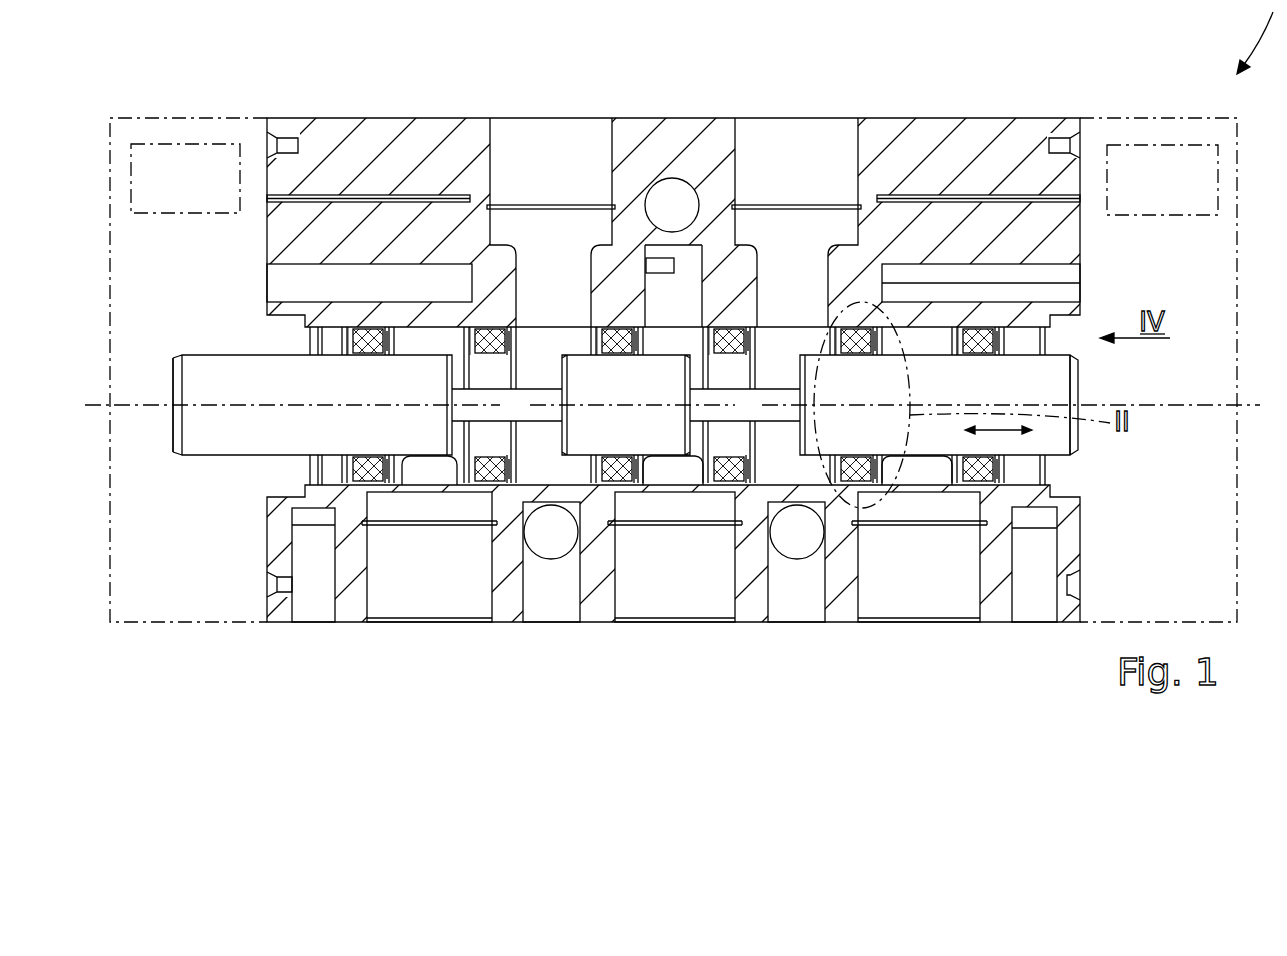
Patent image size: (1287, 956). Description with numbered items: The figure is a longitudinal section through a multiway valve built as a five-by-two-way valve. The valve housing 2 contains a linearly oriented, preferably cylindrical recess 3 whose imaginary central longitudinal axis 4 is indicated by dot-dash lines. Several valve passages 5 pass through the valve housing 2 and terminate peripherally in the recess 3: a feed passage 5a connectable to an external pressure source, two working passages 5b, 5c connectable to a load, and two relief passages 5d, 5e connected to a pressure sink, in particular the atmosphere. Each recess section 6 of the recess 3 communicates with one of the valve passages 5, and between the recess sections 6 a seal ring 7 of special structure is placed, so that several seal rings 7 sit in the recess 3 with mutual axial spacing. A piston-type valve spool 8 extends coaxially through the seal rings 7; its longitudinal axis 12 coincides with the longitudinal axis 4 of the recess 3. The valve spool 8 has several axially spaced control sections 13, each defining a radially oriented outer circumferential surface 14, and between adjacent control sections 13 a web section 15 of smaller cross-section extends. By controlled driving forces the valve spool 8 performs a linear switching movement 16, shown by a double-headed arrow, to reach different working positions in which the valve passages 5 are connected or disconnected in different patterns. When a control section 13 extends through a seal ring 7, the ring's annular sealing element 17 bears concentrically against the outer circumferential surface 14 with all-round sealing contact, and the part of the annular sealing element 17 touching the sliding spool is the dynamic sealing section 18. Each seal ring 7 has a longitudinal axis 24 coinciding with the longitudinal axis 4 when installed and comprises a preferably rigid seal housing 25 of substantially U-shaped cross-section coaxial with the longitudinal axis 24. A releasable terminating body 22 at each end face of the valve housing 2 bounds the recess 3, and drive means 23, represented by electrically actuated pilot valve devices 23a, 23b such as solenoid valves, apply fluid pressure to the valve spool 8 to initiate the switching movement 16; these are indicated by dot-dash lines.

The valve housing 2 is at (1045, 130).
The recess 3 is at (438, 327).
The central longitudinal axis 4 is at (672, 463).
The valve passages 5 is at (674, 366).
The feed passage 5a is at (658, 605).
The working passage 5b is at (535, 135).
The working passage 5c is at (780, 135).
The relief passage 5d is at (407, 605).
The relief passage 5e is at (905, 605).
The recess sections 6 is at (673, 327).
The seal ring 7 is at (372, 483).
The valve spool 8 is at (252, 447).
The longitudinal axis 12 is at (672, 463).
The control section 13 is at (372, 441).
The outer circumferential surface 14 is at (415, 455).
The web section 15 is at (503, 418).
The switching movement 16 is at (1013, 432).
The annular sealing element 17 is at (372, 328).
The dynamic sealing section 18 is at (370, 357).
The terminating body 22 is at (152, 128).
The drive means 23 is at (674, 129).
The pilot valve device 23a is at (1148, 155).
The pilot valve device 23b is at (200, 155).
The longitudinal axis 24 is at (672, 463).
The seal housing 25 is at (365, 327).